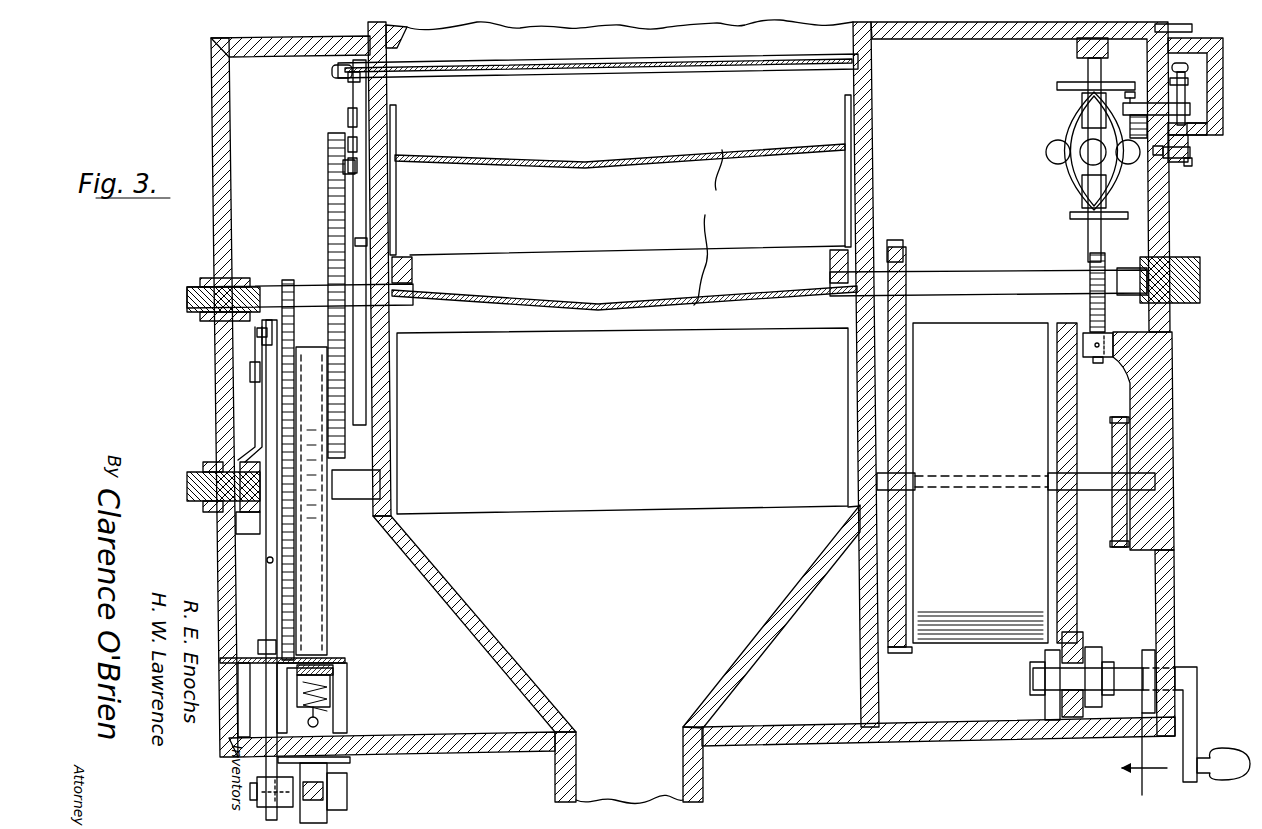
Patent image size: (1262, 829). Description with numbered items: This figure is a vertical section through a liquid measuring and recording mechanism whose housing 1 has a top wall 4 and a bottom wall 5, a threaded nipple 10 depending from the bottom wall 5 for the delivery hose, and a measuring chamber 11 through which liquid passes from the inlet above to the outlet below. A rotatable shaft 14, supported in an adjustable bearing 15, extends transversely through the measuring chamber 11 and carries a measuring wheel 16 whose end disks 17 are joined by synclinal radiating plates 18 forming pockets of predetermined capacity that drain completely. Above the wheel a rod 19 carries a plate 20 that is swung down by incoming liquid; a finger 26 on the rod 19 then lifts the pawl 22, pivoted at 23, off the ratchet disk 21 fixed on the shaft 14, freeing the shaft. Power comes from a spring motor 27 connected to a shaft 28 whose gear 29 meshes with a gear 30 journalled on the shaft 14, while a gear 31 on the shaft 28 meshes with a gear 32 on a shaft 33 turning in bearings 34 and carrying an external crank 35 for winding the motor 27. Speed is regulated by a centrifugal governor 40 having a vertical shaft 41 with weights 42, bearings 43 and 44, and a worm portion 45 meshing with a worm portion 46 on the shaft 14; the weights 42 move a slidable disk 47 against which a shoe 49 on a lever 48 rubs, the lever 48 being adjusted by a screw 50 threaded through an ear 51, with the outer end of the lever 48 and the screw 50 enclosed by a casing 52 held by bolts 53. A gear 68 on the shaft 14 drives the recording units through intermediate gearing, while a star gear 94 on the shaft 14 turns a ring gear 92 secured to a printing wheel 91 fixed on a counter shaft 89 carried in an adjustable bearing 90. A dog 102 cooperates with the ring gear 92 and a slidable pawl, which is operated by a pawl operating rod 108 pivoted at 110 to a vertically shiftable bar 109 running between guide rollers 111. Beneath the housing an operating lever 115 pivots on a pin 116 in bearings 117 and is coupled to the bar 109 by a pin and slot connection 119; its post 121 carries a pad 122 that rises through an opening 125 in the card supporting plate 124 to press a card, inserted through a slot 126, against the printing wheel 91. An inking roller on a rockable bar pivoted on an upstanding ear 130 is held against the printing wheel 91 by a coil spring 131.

The housing 1 is at (208, 99).
The top wall 4 is at (232, 44).
The bottom wall 5 is at (930, 742).
The threaded nipple 10 is at (678, 777).
The measuring chamber 11 is at (556, 580).
The rotatable shaft 14 is at (945, 286).
The adjustable bearing 15 is at (188, 293).
The measuring wheel 16 is at (604, 262).
The end disks 17 is at (397, 215).
The synclinal radiating plates 18 is at (620, 224).
The rod 19 is at (332, 70).
The plate 20 is at (575, 78).
The ratchet disk 21 is at (345, 207).
The pawl 22 is at (353, 108).
The pivot 23 is at (332, 170).
The finger 26 is at (350, 80).
The spring motor 27 is at (1005, 605).
The shaft 28 is at (1145, 479).
The gear 29 is at (900, 654).
The gear 30 is at (900, 238).
The gear 31 is at (1070, 412).
The gear 32 is at (1075, 716).
The shaft 33 is at (1125, 667).
The bearings 34 is at (1050, 706).
The crank 35 is at (1197, 706).
The centrifugal governor 40 is at (1052, 122).
The vertically disposed shaft 41 is at (1090, 223).
The weights 42 is at (1092, 152).
The bearing 43 is at (1077, 46).
The bearing 44 is at (1110, 356).
The worm portion 45 is at (1138, 253).
The worm portion 46 is at (1087, 263).
The disk 47 is at (1057, 85).
The lever 48 is at (1234, 167).
The shoe 49 is at (1134, 75).
The screw 50 is at (1207, 128).
The ear 51 is at (1188, 84).
The casing 52 is at (1210, 72).
The bolts 53 is at (1192, 28).
The gear 68 is at (336, 245).
The counter shaft 89 is at (350, 499).
The adjustable bearing 90 is at (190, 482).
The printing wheel 91 is at (318, 598).
The ring gear 92 is at (297, 568).
The star gear 94 is at (272, 285).
The dog 102 is at (240, 526).
The pawl operating rod 108 is at (255, 425).
The vertically shiftable bar 109 is at (266, 560).
The pivotal connection 110 is at (250, 370).
The guide rollers 111 is at (260, 335).
The operating lever 115 is at (330, 782).
The pin 116 is at (340, 796).
The bearings 117 is at (342, 806).
The pin and slot connection 119 is at (286, 807).
The post 121 is at (340, 696).
The pad 122 is at (347, 682).
The card supporting plate 124 is at (256, 700).
The opening 125 is at (330, 658).
The slot 126 is at (225, 660).
The upstanding ear 130 is at (325, 736).
The coil spring 131 is at (320, 722).